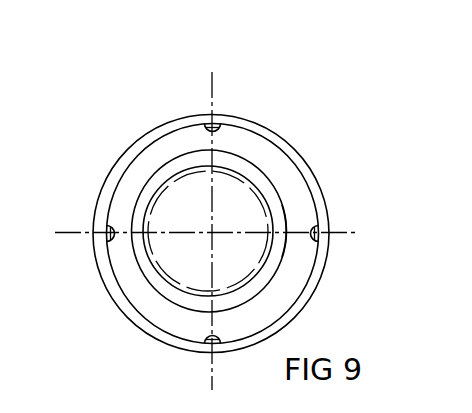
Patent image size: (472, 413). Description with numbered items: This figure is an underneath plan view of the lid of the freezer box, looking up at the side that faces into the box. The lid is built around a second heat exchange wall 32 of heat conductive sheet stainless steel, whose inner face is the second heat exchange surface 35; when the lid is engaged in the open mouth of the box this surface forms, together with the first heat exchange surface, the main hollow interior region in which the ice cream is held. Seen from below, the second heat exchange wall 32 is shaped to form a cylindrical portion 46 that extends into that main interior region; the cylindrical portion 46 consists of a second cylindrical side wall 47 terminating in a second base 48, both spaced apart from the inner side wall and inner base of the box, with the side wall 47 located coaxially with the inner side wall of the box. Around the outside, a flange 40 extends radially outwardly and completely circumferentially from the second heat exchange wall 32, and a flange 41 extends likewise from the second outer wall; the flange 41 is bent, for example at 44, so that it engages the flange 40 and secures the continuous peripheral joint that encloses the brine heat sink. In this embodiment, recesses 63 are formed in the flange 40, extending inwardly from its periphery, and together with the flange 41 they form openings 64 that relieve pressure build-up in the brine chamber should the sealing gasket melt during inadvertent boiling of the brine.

The second heat exchange wall 32 is at (294, 272).
The second heat exchange surface 35 is at (238, 203).
The flange 40 is at (288, 187).
The flange 41 is at (294, 157).
The bend 44 is at (300, 308).
The cylindrical portion 46 is at (183, 277).
The second cylindrical side wall 47 is at (193, 262).
The second base 48 is at (172, 203).
The recesses 63 is at (206, 126).
The openings 64 is at (218, 126).